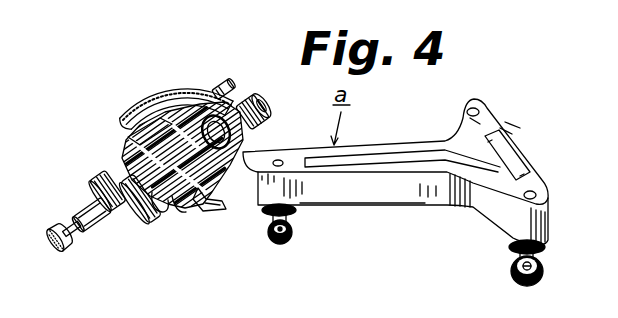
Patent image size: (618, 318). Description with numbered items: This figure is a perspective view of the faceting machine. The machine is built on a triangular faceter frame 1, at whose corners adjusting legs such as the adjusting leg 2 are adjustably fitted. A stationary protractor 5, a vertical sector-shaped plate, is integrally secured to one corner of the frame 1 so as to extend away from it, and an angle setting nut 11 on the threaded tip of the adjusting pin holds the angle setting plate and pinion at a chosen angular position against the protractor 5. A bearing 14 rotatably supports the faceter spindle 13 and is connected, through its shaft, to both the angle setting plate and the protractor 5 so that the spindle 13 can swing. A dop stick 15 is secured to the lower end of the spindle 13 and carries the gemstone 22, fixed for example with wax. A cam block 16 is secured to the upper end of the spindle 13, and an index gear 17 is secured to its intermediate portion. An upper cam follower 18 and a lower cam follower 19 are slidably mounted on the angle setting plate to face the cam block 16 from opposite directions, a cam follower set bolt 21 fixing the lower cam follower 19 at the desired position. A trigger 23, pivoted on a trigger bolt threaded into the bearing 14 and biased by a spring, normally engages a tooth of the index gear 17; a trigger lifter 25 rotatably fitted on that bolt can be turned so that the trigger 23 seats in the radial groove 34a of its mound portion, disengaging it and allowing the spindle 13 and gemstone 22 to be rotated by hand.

The triangular faceter frame 1 is at (490, 116).
The adjusting leg 2 is at (542, 278).
The stationary protractor 5 is at (127, 112).
The angle setting nut 11 is at (220, 87).
The faceter spindle 13 is at (103, 206).
The bearing 14 is at (133, 160).
The dop stick 15 is at (75, 232).
The cam block 16 is at (233, 95).
The index gear 17 is at (107, 175).
The upper cam follower 18 is at (195, 95).
The lower cam follower 19 is at (180, 213).
The cam follower set bolt 21 is at (186, 204).
The gemstone 22 is at (58, 248).
The trigger 23 is at (144, 218).
The trigger lifter 25 is at (128, 137).
The radial groove 34a is at (162, 212).